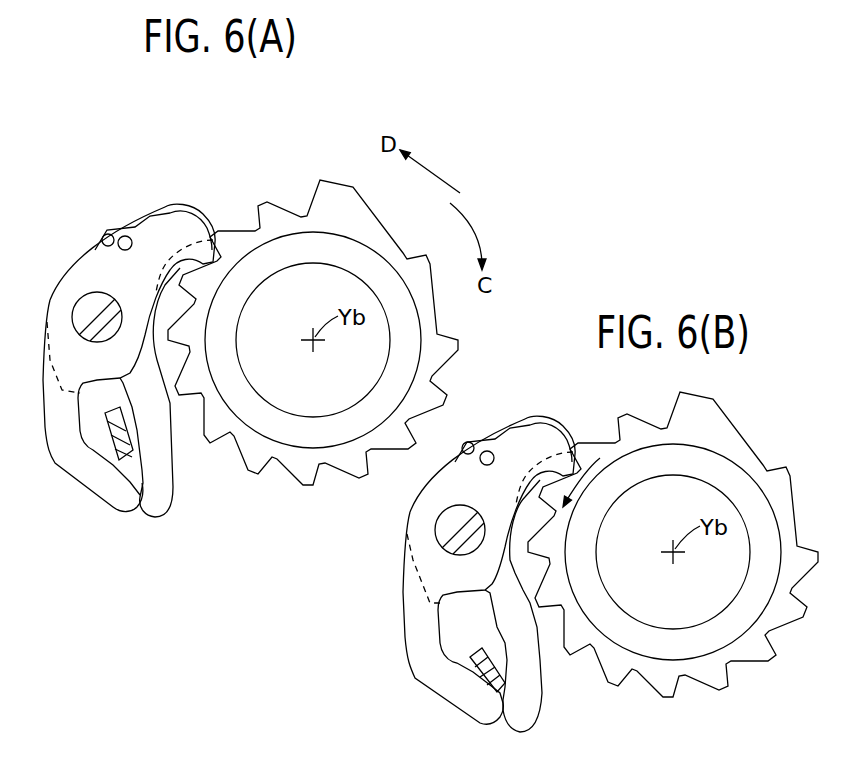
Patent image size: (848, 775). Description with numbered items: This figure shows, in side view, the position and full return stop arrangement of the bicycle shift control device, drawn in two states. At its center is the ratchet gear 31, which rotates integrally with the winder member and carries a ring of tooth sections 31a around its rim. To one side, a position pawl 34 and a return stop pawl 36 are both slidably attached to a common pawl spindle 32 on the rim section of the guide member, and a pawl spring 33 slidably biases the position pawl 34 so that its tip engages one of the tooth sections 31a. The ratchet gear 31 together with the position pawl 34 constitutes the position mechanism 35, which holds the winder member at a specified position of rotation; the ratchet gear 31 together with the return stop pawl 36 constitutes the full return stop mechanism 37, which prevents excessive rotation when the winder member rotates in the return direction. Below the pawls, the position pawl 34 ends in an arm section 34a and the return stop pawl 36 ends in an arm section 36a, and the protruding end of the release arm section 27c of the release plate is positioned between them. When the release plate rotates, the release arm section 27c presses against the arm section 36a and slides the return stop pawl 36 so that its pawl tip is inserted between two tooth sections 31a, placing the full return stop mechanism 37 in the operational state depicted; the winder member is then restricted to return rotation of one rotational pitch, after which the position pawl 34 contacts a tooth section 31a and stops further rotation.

In FIG. 6A, the ratchet gear 31 is at (407, 265).
In FIG. 6B, the ratchet gear 31 is at (686, 552).
In FIG. 6A, the tooth sections 31a is at (232, 228).
In FIG. 6B, the tooth sections 31a is at (673, 564).
In FIG. 6A, the pawl spindle 32 is at (73, 303).
In FIG. 6B, the pawl spindle 32 is at (425, 530).
In FIG. 6A, the pawl spring 33 is at (103, 236).
In FIG. 6A, the position pawl 34 is at (123, 236).
In FIG. 6B, the position pawl 34 is at (477, 423).
In FIG. 6A, the arm section of the position pawl 34a is at (163, 501).
In FIG. 6B, the arm section of the position pawl 34a is at (544, 621).
In FIG. 6A, the position mechanism 35 is at (207, 162).
In FIG. 6A, the return stop pawl 36 is at (172, 230).
In FIG. 6B, the return stop pawl 36 is at (491, 541).
In FIG. 6A, the arm section of the return stop pawl 36a is at (118, 497).
In FIG. 6B, the arm section of the return stop pawl 36a is at (424, 618).
In FIG. 6A, the full return stop mechanism 37 is at (84, 166).
In FIG. 6A, the release arm section 27c is at (118, 414).
In FIG. 6B, the release arm section 27c is at (441, 682).